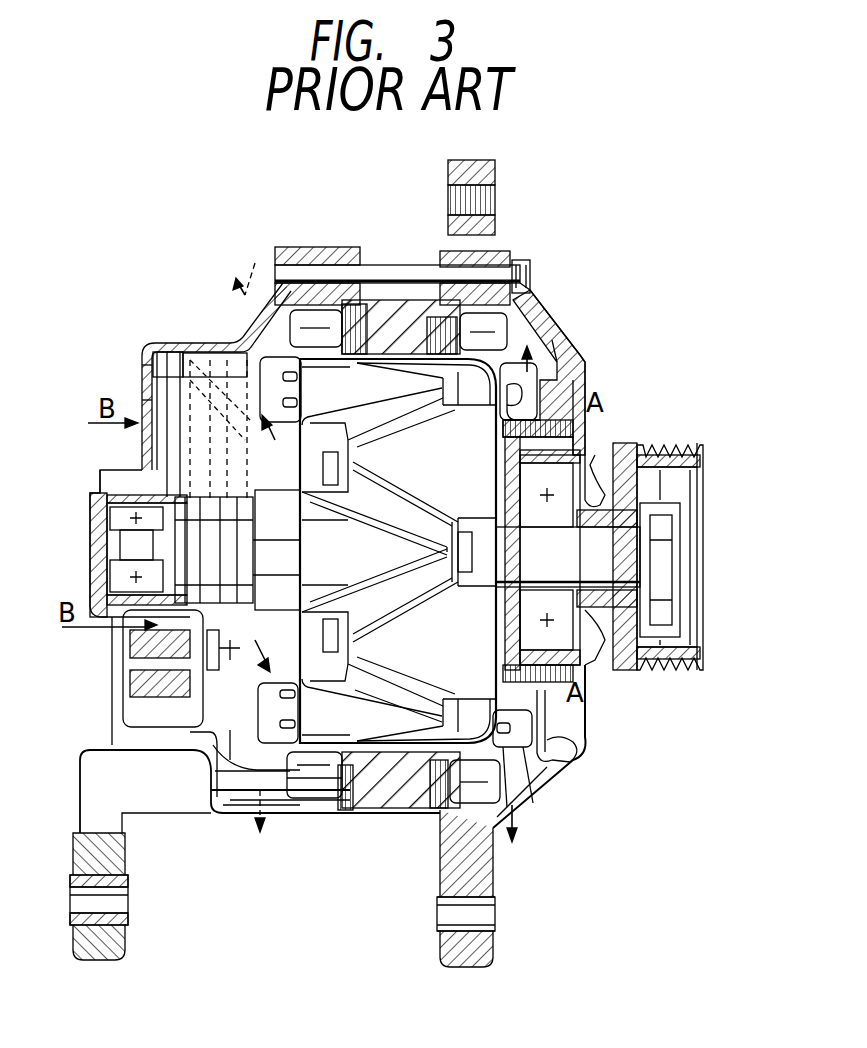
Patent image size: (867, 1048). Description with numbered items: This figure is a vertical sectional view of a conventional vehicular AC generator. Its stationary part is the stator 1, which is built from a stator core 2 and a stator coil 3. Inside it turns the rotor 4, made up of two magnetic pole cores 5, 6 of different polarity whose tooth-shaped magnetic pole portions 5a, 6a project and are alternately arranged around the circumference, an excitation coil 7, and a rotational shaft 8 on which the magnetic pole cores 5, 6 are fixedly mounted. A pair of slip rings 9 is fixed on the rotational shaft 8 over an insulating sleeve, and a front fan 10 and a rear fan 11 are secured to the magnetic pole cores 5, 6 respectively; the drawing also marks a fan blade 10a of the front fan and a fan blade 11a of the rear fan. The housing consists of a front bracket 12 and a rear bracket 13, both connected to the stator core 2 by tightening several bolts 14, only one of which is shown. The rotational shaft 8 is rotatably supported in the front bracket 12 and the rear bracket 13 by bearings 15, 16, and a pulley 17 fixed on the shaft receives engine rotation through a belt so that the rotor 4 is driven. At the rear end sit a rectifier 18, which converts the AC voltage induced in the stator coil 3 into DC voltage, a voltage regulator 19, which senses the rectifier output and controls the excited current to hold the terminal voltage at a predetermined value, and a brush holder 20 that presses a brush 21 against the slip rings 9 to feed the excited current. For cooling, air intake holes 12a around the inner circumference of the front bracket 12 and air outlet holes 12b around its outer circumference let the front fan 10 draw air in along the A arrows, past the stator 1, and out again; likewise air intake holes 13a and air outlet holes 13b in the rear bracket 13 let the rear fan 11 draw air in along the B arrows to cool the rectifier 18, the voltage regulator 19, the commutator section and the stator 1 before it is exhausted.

The stator 1 is at (400, 193).
The stator core 2 is at (390, 303).
The stator coil 3 is at (313, 317).
The rotor 4 is at (415, 860).
The magnetic pole core 5 is at (424, 700).
The tooth-shaped magnetic pole portion 5a is at (415, 655).
The magnetic pole core 6 is at (335, 670).
The tooth-shaped magnetic pole portion 6a is at (352, 663).
The excitation coil 7 is at (372, 615).
The rotational shaft 8 is at (590, 632).
The slip rings 9 is at (185, 500).
The front fan 10 is at (508, 808).
The fan blade 10a is at (533, 803).
The rear fan 11 is at (303, 720).
The rear fan blade 11a is at (238, 793).
The front bracket 12 is at (582, 360).
The air intake holes 12a is at (547, 413).
The air outlet holes 12b is at (560, 343).
The rear bracket 13 is at (213, 337).
The air intake holes 13a is at (140, 397).
The air outlet holes 13b is at (203, 855).
The bolt 14 is at (525, 262).
The bearing 15 is at (590, 493).
The bearing 16 is at (115, 515).
The pulley 17 is at (671, 673).
The rectifier 18 is at (125, 655).
The voltage regulator 19 is at (147, 380).
The brush holder 20 is at (180, 343).
The brush 21 is at (145, 350).